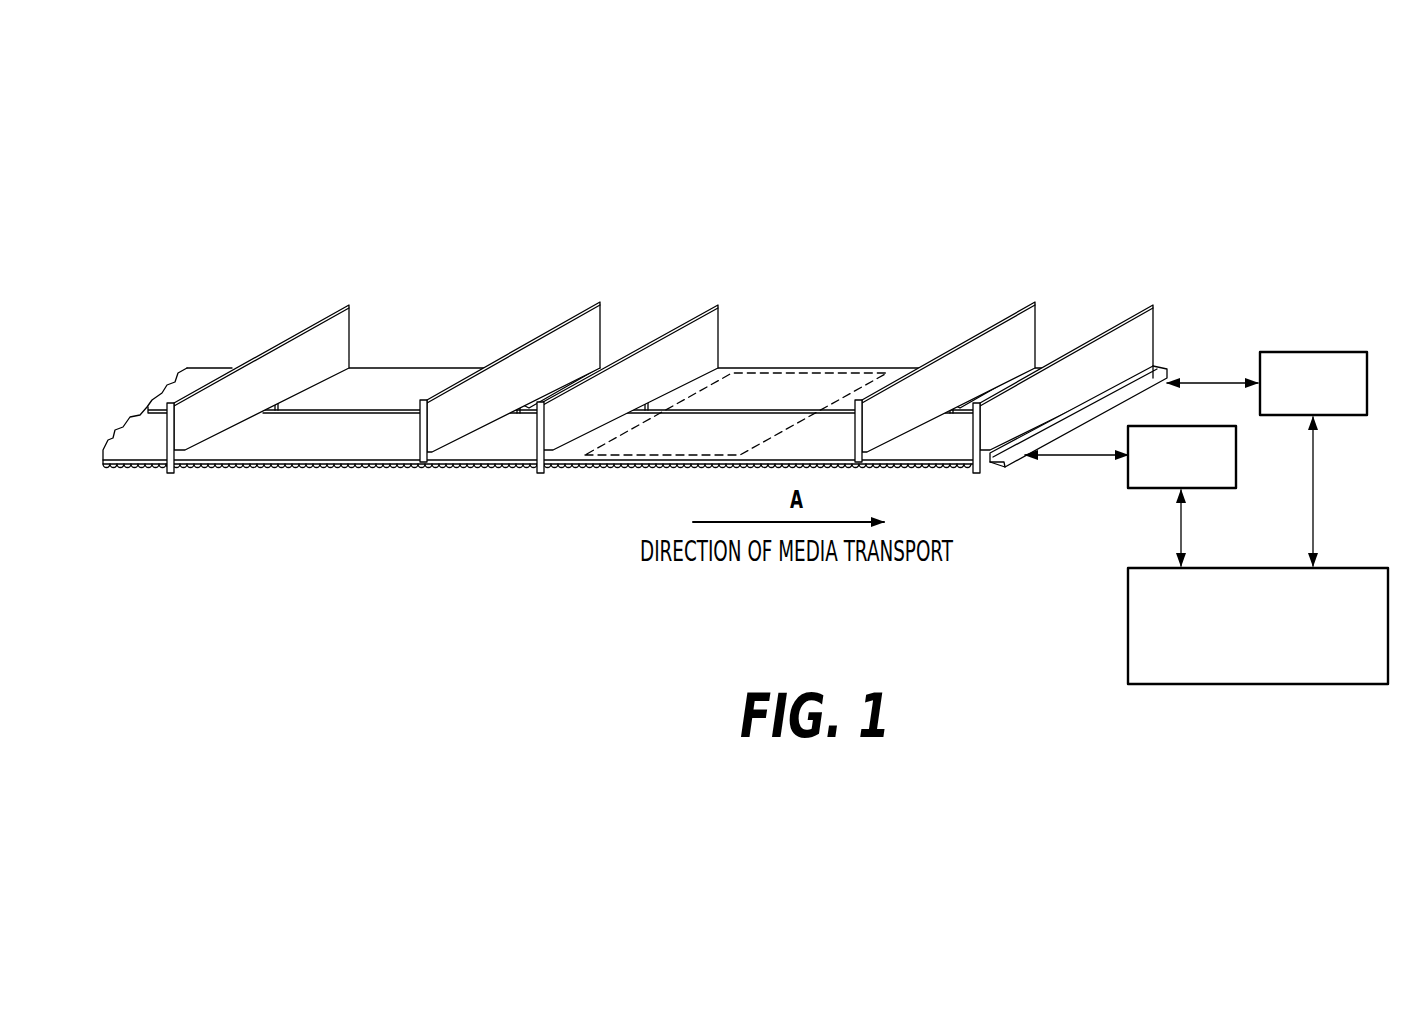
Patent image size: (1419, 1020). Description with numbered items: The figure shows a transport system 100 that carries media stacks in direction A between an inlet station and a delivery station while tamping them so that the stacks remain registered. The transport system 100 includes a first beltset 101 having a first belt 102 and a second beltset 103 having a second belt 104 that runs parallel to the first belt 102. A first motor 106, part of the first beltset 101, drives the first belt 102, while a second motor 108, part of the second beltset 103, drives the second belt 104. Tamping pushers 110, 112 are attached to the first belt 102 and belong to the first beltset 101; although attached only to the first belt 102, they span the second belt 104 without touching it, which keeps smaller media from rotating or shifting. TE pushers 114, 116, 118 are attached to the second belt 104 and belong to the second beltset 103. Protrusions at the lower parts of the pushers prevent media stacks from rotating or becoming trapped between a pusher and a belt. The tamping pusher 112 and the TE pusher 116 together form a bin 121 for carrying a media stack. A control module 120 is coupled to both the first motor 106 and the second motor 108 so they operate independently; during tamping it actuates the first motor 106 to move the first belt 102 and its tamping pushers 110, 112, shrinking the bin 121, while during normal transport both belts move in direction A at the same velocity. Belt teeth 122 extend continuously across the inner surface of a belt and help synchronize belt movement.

The transport system 100 is at (873, 240).
The first beltset 101 is at (1052, 496).
The first belt 102 is at (302, 447).
The second beltset 103 is at (1252, 312).
The second belt 104 is at (394, 388).
The first motor 106 is at (1155, 490).
The second motor 108 is at (1313, 352).
The tamping pusher 110 is at (600, 302).
The tamping pusher 112 is at (1035, 302).
The TE pusher 114 is at (348, 305).
The TE pusher 116 is at (718, 305).
The TE pusher 118 is at (1155, 305).
The control module 120 is at (1351, 568).
The bin 121 is at (788, 373).
The belt teeth 122 is at (212, 473).